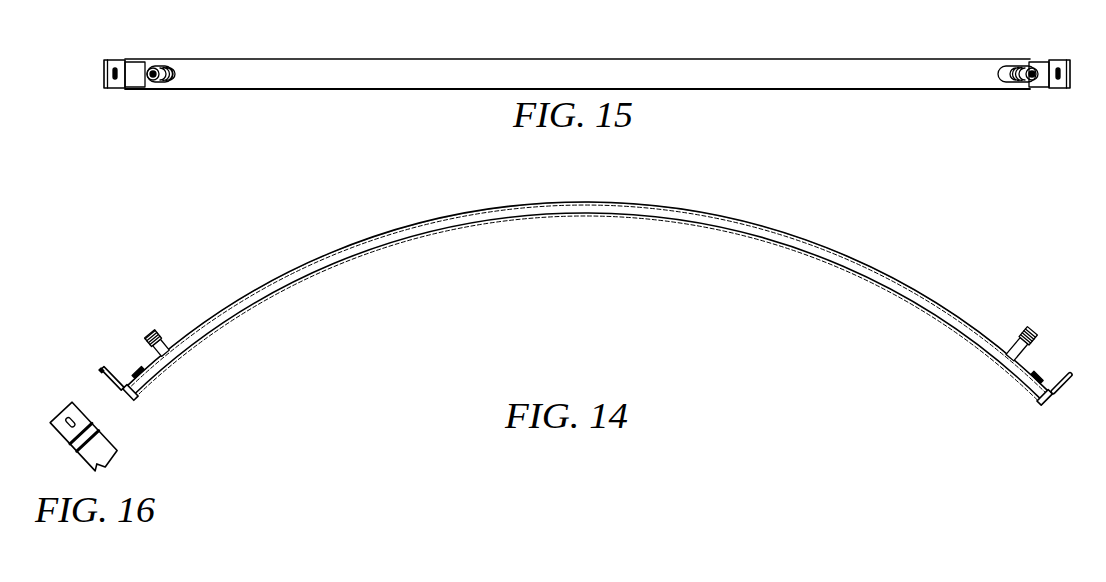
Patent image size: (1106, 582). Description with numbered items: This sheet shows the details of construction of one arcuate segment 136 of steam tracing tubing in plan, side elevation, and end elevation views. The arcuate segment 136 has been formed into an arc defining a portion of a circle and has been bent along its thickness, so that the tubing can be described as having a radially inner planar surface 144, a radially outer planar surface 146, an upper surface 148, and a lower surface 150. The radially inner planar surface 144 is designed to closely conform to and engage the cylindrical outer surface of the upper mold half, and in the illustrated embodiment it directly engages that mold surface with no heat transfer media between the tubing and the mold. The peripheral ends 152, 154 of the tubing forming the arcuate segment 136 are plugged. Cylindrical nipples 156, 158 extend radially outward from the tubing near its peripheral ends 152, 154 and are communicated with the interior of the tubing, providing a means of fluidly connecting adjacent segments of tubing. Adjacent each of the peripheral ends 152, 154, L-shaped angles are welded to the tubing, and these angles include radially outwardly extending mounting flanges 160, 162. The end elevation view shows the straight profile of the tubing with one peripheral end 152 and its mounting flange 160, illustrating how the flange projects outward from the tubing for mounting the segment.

In FIG. 15, the arcuate segment 136 is at (587, 67).
In FIG. 14, the arcuate segment 136 is at (586, 322).
In FIG. 14, the radially inner planar surface 144 is at (542, 217).
In FIG. 15, the radially outer planar surface 146 is at (230, 77).
In FIG. 14, the radially outer planar surface 146 is at (523, 203).
In FIG. 15, the upper surface 148 is at (770, 59).
In FIG. 14, the upper surface 148 is at (653, 213).
In FIG. 15, the lower surface 150 is at (737, 90).
In FIG. 14, the peripheral end 152 is at (126, 397).
In FIG. 16, the peripheral end 152 is at (75, 450).
In FIG. 14, the peripheral end 154 is at (1047, 400).
In FIG. 14, the cylindrical nipple 156 is at (170, 333).
In FIG. 14, the cylindrical nipple 158 is at (1018, 322).
In FIG. 14, the mounting flange 160 is at (108, 368).
In FIG. 16, the mounting flange 160 is at (63, 418).
In FIG. 14, the mounting flange 162 is at (1067, 377).